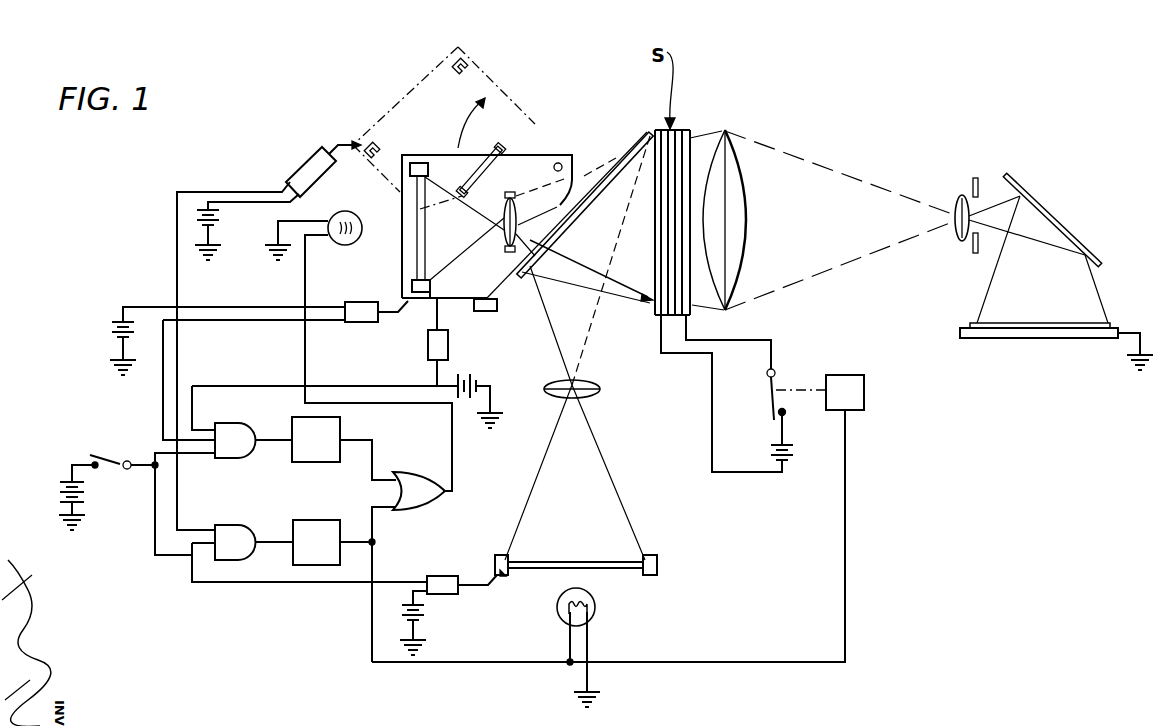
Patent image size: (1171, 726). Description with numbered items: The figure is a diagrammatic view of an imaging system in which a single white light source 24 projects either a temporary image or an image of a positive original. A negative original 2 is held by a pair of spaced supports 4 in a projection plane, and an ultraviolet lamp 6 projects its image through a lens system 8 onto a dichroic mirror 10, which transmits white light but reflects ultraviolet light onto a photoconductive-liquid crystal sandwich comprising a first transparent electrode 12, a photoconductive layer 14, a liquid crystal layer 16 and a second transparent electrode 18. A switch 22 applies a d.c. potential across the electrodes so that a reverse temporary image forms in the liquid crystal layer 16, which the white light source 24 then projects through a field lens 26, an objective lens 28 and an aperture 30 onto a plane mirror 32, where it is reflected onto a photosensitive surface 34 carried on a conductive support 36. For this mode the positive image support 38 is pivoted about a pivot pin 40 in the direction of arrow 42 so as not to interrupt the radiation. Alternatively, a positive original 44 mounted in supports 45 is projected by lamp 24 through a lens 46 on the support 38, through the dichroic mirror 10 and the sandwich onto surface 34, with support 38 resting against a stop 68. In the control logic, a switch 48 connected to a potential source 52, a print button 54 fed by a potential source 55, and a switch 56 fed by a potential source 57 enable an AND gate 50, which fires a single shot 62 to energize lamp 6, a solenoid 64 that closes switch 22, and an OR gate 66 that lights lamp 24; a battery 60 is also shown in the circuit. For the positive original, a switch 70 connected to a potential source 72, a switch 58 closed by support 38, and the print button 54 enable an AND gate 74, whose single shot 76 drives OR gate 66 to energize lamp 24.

The negative original 2 is at (562, 562).
The spaced supports 4 is at (500, 556).
The ultraviolet lamp 6 is at (595, 600).
The lens system 8 is at (590, 382).
The dichroic mirror 10 is at (625, 158).
The first transparent electrode 12 is at (653, 130).
The photoconductive layer 14 is at (664, 130).
The liquid crystal layer 16 is at (677, 130).
The second transparent electrode 18 is at (688, 130).
The switch 22 is at (772, 405).
The white light source 24 is at (345, 246).
The field lens 26 is at (746, 222).
The objective lens 28 is at (958, 210).
The aperture 30 is at (983, 198).
The plane mirror 32 is at (1050, 215).
The photosensitive surface 34 is at (1025, 324).
The conductive support 36 is at (1040, 340).
The positive image support 38 is at (527, 130).
The pivot pin 40 is at (570, 154).
The arrow 42 is at (467, 127).
The positive original 44 is at (418, 235).
The supports 45 is at (420, 163).
The lens 46 is at (516, 208).
The switch 48 is at (442, 576).
The AND gate 50 is at (233, 535).
The potential source 52 is at (425, 608).
The print button 54 is at (110, 455).
The potential source 55 is at (62, 492).
The switch 56 is at (308, 172).
The potential source 57 is at (218, 212).
The switch 58 is at (362, 322).
The battery 60 is at (113, 325).
The single shot 62 is at (302, 520).
The solenoid 64 is at (843, 375).
The OR gate 66 is at (410, 480).
The stop 68 is at (488, 313).
The switch 70 is at (428, 345).
The potential source 72 is at (462, 377).
The AND gate 74 is at (240, 440).
The single shot 76 is at (328, 442).